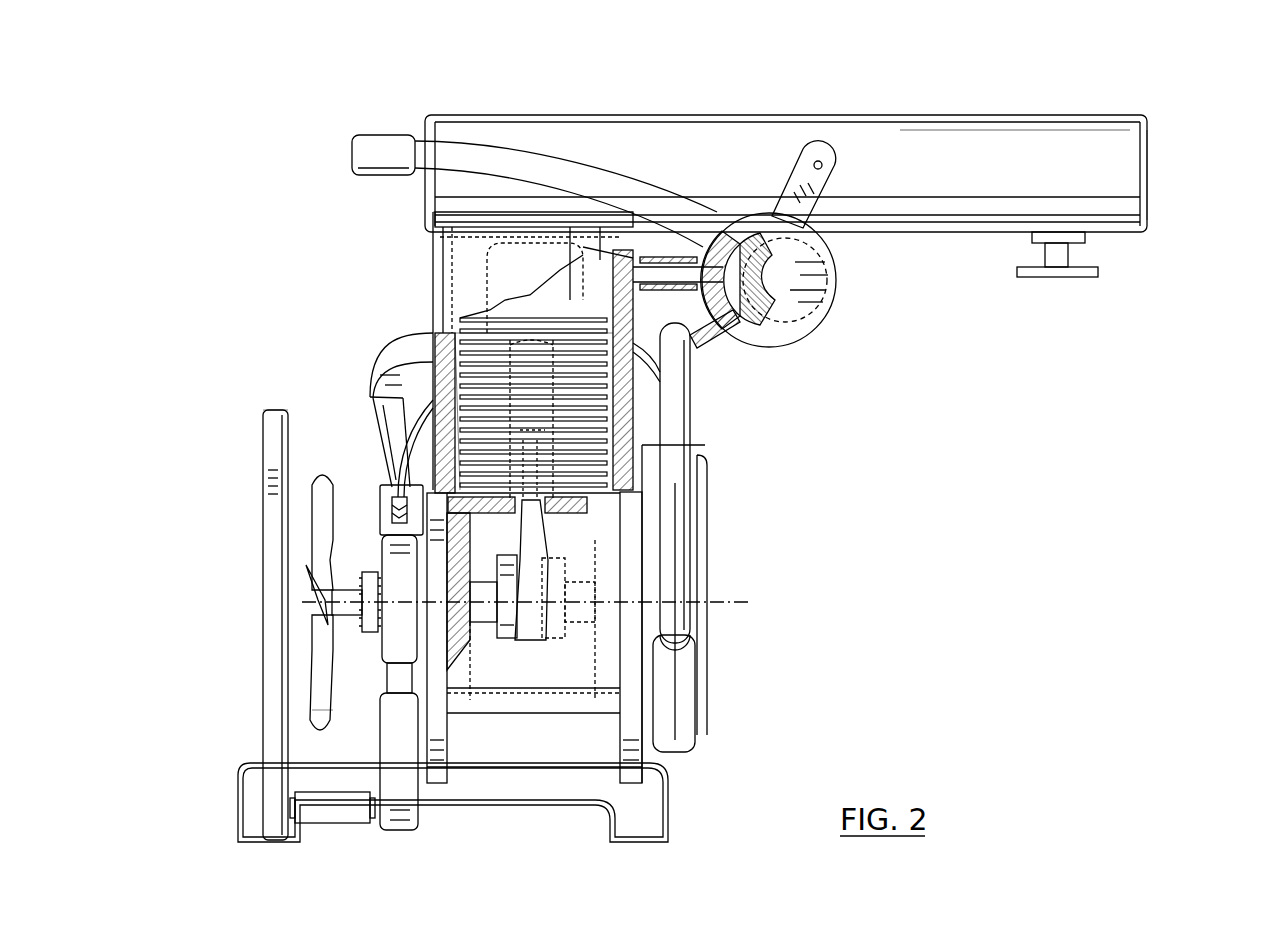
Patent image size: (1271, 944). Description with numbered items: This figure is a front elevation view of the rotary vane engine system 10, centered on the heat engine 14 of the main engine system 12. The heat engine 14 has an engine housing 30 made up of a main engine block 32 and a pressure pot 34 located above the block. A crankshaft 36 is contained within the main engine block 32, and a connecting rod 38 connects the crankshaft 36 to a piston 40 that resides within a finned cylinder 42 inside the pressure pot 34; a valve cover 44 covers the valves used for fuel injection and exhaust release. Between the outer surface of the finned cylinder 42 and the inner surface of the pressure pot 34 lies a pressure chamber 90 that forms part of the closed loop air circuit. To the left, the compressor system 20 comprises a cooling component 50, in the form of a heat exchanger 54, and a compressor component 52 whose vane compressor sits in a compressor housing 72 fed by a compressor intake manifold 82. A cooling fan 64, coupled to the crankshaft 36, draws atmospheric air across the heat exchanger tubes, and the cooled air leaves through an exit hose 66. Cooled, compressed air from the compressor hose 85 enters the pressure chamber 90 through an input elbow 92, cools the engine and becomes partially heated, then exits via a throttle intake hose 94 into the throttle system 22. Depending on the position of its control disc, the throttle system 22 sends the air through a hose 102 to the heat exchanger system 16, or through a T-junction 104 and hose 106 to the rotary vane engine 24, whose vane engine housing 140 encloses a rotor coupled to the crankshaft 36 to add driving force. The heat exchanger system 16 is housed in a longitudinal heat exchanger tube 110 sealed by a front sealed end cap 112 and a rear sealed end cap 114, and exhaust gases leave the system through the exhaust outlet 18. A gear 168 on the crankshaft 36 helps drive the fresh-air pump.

The rotary vane engine system 10 is at (940, 530).
The main engine system 12 is at (345, 228).
The heat engine 14 is at (424, 268).
The heat exchanger system 16 is at (800, 105).
The exhaust outlet 18 is at (1095, 272).
The compressor system 20 is at (247, 615).
The throttle system 22 is at (856, 300).
The rotary vane engine 24 is at (722, 622).
The engine housing 30 is at (430, 308).
The main engine block 32 is at (610, 670).
The pressure pot 34 is at (440, 238).
The crankshaft 36 is at (470, 662).
The connecting rod 38 is at (523, 537).
The piston 40 is at (560, 390).
The finned cylinder 42 is at (605, 470).
The valve cover 44 is at (470, 267).
The cooling component 50 is at (250, 410).
The compressor component 52 is at (420, 841).
The heat exchanger 54 is at (278, 455).
The cooling fan 64 is at (325, 713).
The exit hose 66 is at (335, 822).
The compressor housing 72 is at (390, 488).
The compressor intake manifold 82 is at (398, 572).
The compressor hose 85 is at (387, 418).
The pressure chamber 90 is at (470, 290).
The input elbow 92 is at (387, 357).
The throttle intake hose 94 is at (683, 285).
The hose 102 is at (540, 165).
The T-junction 104 is at (683, 345).
The hose 106 is at (690, 395).
The heat exchanger tube 110 is at (1050, 152).
The front sealed end cap 112 is at (425, 127).
The rear sealed end cap 114 is at (1148, 140).
The vane engine housing 140 is at (700, 545).
The gear 168 is at (376, 632).